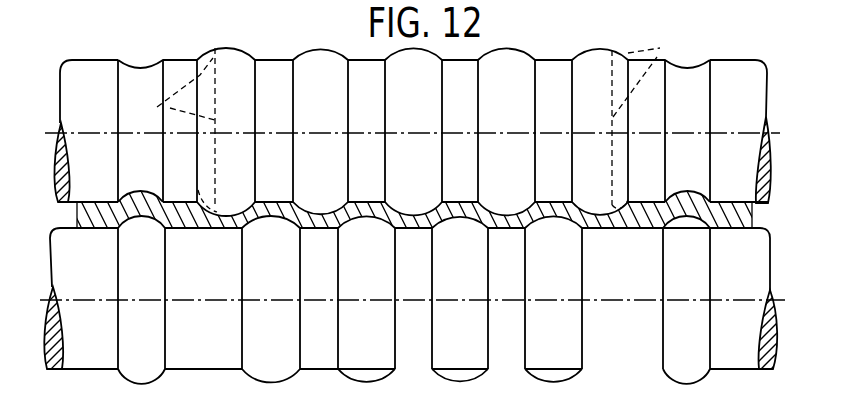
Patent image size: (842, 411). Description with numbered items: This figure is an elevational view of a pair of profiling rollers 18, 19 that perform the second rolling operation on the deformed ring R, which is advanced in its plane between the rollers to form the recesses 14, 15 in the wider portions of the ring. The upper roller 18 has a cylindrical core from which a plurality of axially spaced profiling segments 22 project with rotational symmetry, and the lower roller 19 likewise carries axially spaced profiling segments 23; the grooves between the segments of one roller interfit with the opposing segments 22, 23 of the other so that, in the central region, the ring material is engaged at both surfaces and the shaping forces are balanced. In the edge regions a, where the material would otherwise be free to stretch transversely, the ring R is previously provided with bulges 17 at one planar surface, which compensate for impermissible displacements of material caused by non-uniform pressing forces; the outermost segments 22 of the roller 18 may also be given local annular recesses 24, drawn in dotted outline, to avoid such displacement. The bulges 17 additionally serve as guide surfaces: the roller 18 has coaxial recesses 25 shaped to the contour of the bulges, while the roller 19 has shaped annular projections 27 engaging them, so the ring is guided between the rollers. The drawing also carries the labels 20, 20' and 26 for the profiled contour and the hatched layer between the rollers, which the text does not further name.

The roller 18 is at (135, 57).
The roller 19 is at (658, 374).
The profiling segments 22 is at (318, 66).
The local annular recesses 24 is at (160, 105).
The coaxial recesses 25 is at (128, 78).
The bulges 17 is at (133, 192).
The edge regions a is at (180, 200).
The recesses 15 is at (237, 213).
The flat bottoms of upper grooves 20 is at (414, 180).
The end arches of lower sheet 20' is at (414, 272).
The intermediate hatched layer 26 is at (78, 214).
The recesses 14 is at (275, 219).
The ring R is at (192, 222).
The profiling segments 23 is at (288, 372).
The shaped annular projections 27 is at (125, 341).